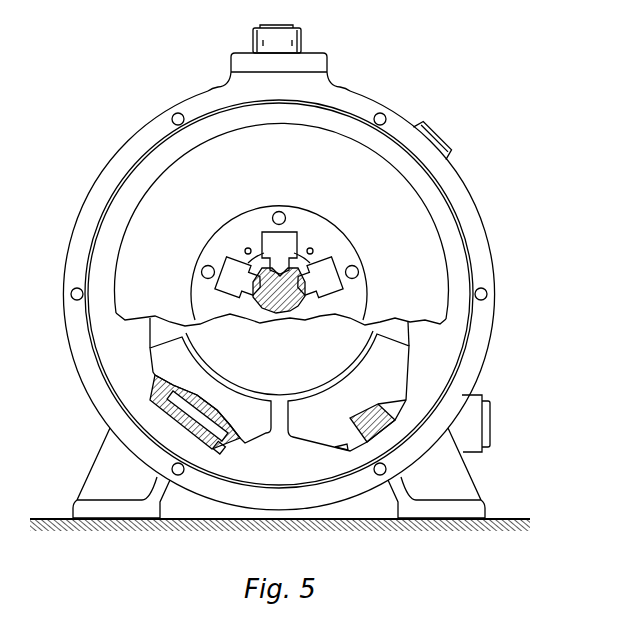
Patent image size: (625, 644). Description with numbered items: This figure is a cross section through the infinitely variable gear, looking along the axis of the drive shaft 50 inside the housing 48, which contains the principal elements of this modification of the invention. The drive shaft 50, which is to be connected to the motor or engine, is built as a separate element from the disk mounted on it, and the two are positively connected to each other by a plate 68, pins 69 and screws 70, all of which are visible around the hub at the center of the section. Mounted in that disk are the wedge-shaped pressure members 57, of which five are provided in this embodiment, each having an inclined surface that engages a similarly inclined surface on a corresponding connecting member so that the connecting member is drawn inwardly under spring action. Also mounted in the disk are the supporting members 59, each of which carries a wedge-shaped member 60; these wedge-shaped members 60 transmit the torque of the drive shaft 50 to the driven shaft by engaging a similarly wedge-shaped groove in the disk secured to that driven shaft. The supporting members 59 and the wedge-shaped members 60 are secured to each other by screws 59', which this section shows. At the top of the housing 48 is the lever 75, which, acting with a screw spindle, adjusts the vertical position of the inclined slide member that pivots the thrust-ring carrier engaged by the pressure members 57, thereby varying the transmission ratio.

The housing 48 is at (483, 378).
The lever 75 is at (299, 46).
The plate 68 is at (213, 250).
The screws 70 is at (283, 211).
The pins 69 is at (247, 248).
The wedge-shaped pressure members 57 is at (325, 264).
The drive shaft 50 is at (286, 303).
The wedge-shaped member 60 is at (259, 434).
The supporting members 59 is at (274, 416).
The screws 59' is at (230, 460).